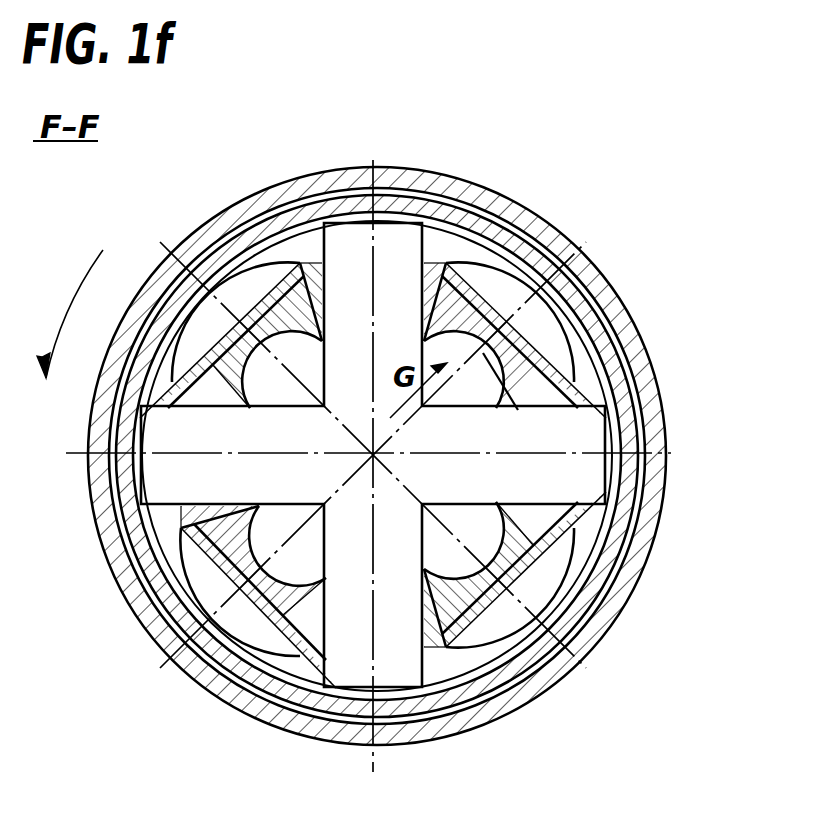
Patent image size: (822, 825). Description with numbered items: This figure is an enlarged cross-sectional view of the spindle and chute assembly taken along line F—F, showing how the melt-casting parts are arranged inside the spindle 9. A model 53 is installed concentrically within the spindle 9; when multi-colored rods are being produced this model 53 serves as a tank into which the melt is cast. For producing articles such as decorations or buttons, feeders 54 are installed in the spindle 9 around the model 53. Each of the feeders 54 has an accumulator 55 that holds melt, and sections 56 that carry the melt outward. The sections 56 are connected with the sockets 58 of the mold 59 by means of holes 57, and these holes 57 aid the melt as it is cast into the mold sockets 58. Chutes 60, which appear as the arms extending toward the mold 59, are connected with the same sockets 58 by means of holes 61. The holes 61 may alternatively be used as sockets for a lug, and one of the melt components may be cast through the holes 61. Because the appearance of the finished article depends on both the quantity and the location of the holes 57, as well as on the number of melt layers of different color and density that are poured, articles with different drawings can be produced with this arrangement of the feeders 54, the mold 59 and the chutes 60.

The spindle 9 is at (535, 225).
The model 53 is at (558, 263).
The feeders 54 is at (535, 287).
The accumulators 55 is at (583, 490).
The sections 56 is at (543, 522).
The holes 57 is at (557, 542).
The sockets 58 is at (507, 635).
The mold 59 is at (537, 388).
The chutes 60 is at (517, 410).
The holes 61 is at (517, 422).